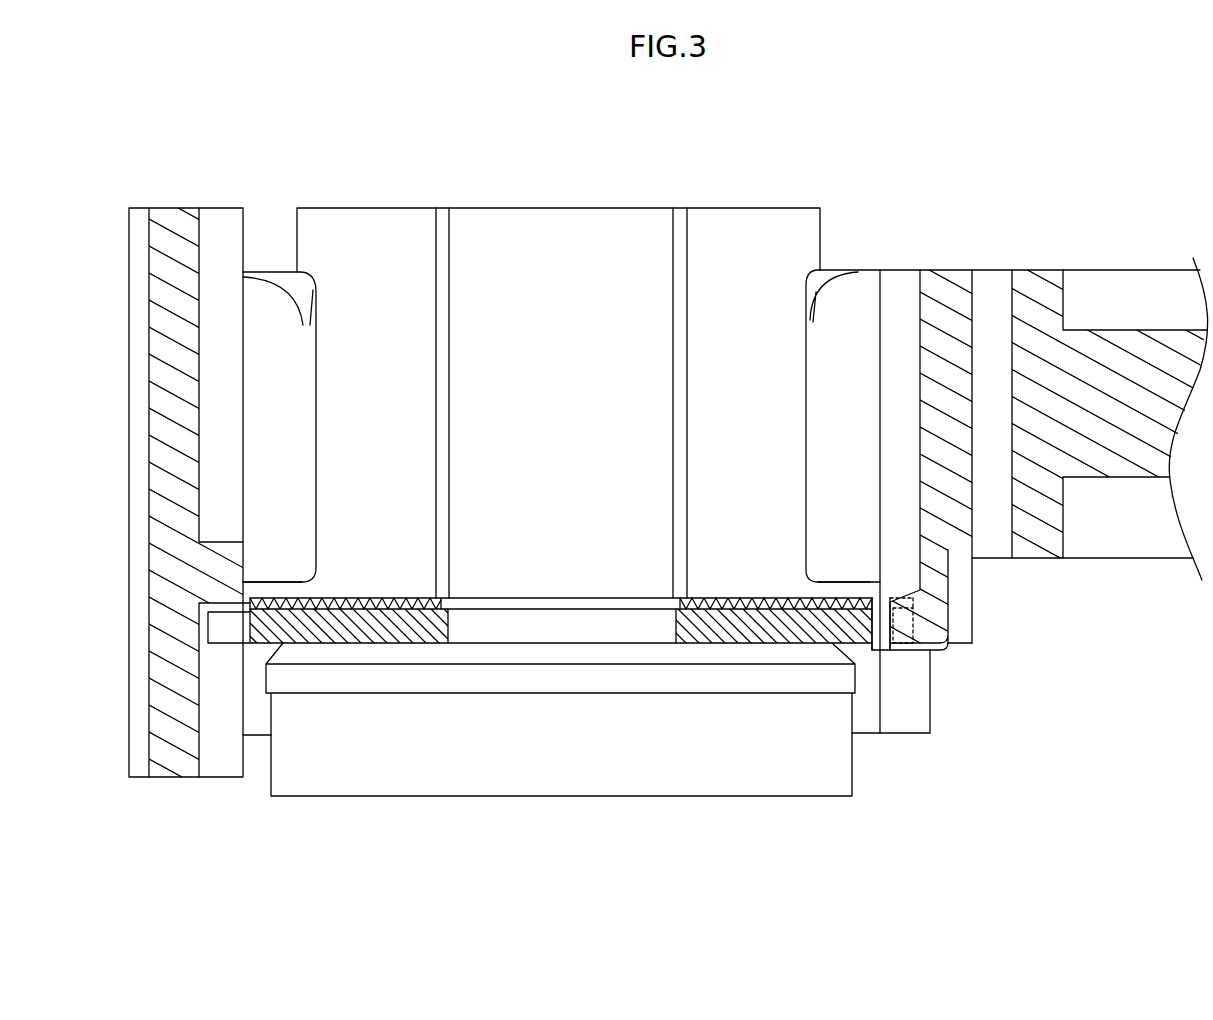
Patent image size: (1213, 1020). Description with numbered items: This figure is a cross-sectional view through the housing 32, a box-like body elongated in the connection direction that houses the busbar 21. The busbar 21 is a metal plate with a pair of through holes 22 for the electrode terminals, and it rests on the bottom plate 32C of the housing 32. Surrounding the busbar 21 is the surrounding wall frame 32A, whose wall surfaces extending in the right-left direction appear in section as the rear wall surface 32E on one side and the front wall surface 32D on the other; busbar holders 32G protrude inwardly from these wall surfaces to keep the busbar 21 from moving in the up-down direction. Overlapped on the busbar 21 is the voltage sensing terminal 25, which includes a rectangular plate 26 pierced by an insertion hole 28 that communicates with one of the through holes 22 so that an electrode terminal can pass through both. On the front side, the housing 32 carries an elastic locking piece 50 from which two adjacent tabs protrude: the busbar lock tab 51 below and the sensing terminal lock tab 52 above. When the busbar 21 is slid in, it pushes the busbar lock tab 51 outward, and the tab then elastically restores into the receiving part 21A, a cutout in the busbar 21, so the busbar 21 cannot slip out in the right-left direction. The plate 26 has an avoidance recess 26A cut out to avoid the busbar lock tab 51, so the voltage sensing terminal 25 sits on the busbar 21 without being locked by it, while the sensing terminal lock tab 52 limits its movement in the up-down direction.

The busbar 21 is at (330, 627).
The receiving part 21A is at (886, 628).
The through hole 22 is at (448, 627).
The voltage sensing terminal 25 is at (499, 143).
The plate 26 is at (405, 599).
The avoidance recess 26A is at (890, 620).
The insertion hole 28 is at (445, 603).
The housing 32 is at (737, 196).
The surrounding wall frame 32A is at (585, 250).
The bottom plate 32C is at (293, 657).
The front wall surface 32D is at (921, 329).
The rear wall surface 32E is at (197, 248).
The busbar holder 32G is at (260, 588).
The elastic locking piece 50 is at (947, 528).
The busbar lock tab 51 is at (920, 648).
The sensing terminal lock tab 52 is at (907, 560).